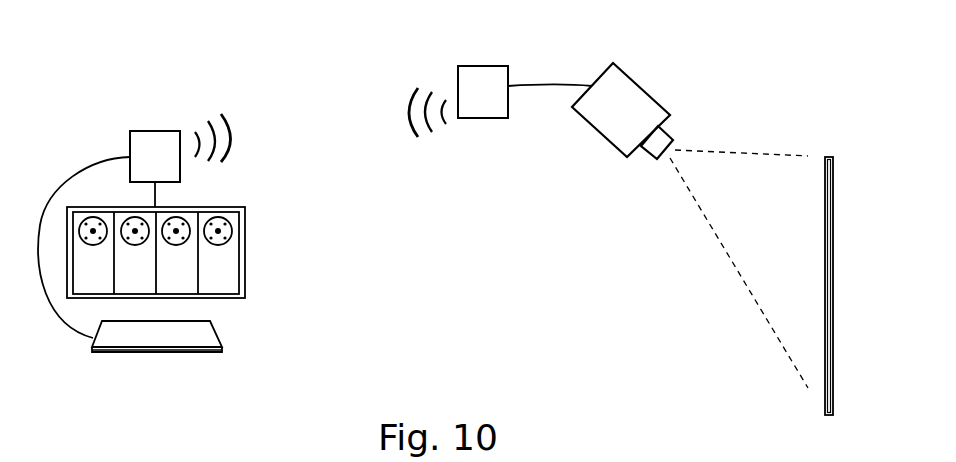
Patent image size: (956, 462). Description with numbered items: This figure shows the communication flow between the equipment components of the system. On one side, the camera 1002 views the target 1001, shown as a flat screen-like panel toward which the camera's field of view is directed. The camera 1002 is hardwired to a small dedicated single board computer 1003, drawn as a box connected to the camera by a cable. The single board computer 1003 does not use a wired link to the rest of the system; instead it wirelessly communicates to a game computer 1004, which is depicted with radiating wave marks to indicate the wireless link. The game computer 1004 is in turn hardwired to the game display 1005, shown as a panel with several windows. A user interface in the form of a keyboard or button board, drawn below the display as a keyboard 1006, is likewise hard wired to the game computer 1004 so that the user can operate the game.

The target 1001 is at (825, 397).
The camera 1002 is at (612, 147).
The small dedicated single board computer 1003 is at (480, 118).
The game computer 1004 is at (170, 122).
The game display 1005 is at (252, 265).
The keyboard 1006 is at (240, 338).